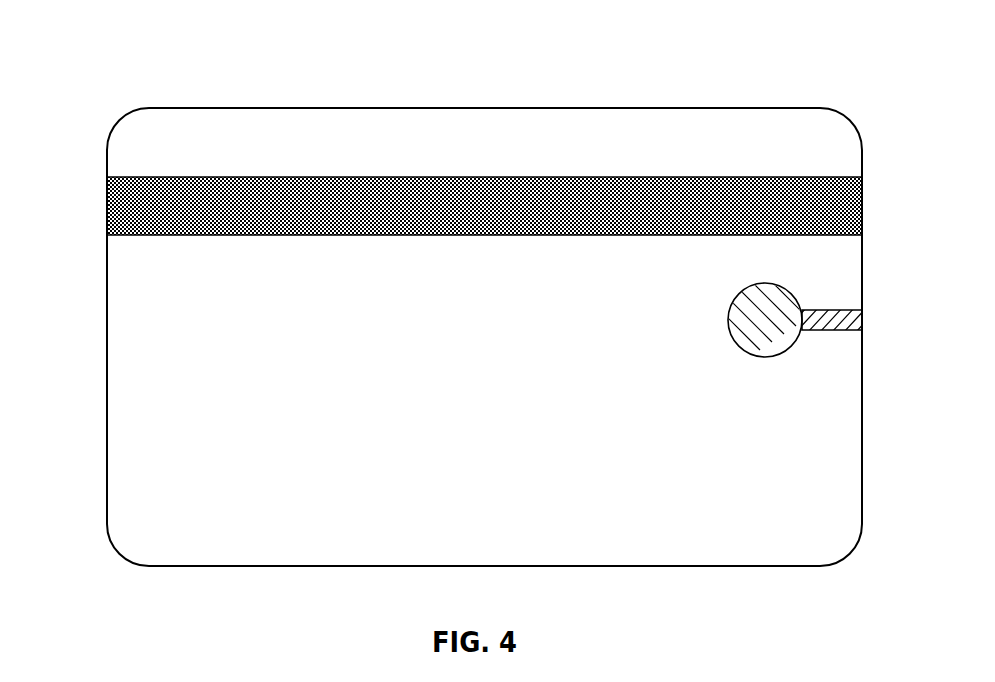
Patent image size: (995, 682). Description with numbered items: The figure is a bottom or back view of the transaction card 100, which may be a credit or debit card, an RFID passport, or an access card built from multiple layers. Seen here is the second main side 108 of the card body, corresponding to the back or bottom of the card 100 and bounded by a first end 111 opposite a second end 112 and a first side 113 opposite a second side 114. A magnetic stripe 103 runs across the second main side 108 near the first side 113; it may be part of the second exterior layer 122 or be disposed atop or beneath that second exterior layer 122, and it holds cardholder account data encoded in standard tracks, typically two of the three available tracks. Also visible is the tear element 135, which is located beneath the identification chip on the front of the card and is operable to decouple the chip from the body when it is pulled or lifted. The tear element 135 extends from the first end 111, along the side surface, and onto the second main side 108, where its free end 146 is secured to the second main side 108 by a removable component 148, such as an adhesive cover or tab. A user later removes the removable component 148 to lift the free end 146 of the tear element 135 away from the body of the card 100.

The transaction card 100 is at (131, 55).
The magnetic stripe 103 is at (116, 201).
The second main side 108 is at (128, 473).
The first end 111 is at (863, 440).
The second end 112 is at (106, 334).
The first side 113 is at (533, 108).
The second side 114 is at (668, 567).
The second exterior layer 122 is at (415, 427).
The tear element 135 is at (863, 322).
The free end 146 is at (808, 322).
The removable component 148 is at (745, 302).